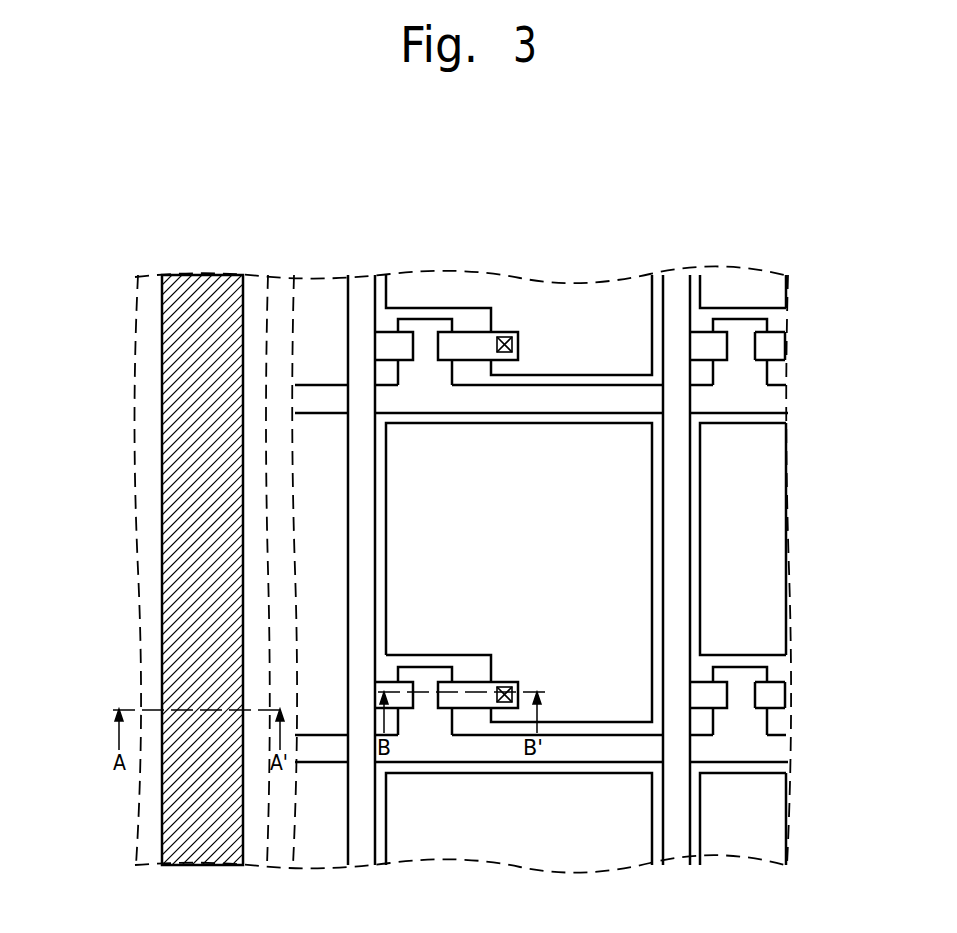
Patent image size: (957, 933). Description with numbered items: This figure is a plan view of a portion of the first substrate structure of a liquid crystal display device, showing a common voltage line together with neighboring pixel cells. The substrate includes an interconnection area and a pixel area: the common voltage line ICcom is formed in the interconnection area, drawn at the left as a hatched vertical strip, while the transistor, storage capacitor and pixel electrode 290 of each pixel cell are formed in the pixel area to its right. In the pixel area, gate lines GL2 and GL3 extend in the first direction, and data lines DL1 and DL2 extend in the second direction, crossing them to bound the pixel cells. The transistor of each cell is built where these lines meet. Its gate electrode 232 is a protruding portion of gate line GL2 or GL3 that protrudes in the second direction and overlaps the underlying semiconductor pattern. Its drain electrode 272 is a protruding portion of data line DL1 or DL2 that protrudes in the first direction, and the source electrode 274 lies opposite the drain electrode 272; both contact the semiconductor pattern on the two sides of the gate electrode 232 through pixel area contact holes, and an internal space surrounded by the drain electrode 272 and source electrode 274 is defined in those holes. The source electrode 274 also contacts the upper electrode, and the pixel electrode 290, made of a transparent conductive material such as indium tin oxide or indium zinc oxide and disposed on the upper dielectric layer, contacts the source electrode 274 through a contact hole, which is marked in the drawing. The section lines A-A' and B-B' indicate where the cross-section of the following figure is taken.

The drain electrode 272 is at (404, 700).
The gate electrode 232 is at (433, 722).
The source electrode 274 is at (473, 700).
The pixel electrode 290 is at (582, 713).
The data line DL1 is at (361, 285).
The data line DL2 is at (680, 285).
The gate line GL2 is at (775, 400).
The gate line GL3 is at (775, 750).
The common voltage line ICcom is at (172, 418).